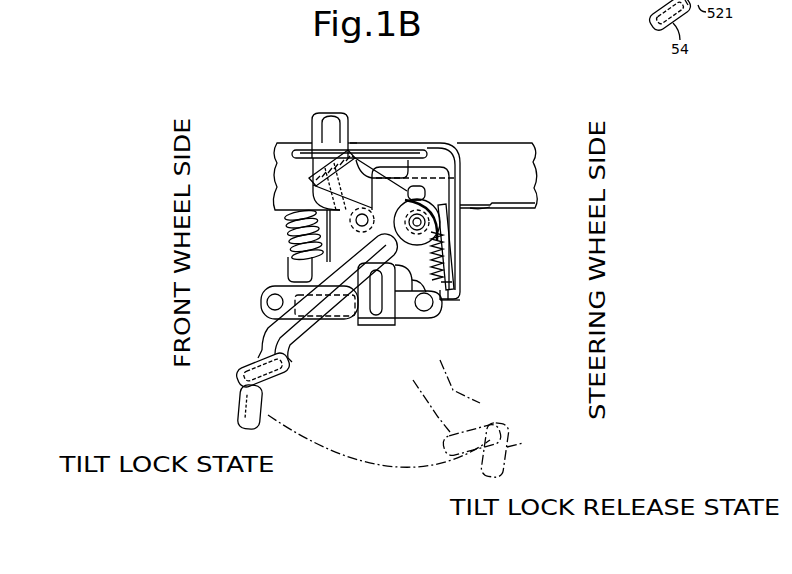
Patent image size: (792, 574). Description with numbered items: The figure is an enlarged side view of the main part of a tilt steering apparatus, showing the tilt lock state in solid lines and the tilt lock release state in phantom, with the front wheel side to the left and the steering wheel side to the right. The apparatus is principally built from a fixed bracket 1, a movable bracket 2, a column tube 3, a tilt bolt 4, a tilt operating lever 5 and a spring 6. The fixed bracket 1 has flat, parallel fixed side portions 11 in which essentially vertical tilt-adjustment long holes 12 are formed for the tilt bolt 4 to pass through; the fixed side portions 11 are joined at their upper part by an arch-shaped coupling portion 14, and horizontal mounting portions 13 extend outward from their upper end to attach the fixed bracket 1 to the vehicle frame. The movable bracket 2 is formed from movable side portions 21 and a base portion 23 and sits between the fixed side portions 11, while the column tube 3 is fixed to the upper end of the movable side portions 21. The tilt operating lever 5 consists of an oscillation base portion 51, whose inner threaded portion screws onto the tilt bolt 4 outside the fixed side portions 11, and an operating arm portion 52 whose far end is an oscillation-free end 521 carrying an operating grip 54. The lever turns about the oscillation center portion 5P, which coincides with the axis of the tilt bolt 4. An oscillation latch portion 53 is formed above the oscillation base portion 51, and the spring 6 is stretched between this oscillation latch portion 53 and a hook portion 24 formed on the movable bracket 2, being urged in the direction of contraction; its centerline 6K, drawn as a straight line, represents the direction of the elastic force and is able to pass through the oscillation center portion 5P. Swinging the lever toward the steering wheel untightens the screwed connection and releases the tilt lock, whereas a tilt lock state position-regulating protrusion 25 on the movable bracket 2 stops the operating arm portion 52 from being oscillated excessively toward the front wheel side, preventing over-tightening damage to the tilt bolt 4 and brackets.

The fixed bracket 1 is at (466, 190).
The movable bracket 2 is at (386, 330).
The column tube 3 is at (505, 143).
The tilt bolt 4 is at (441, 225).
The tilt operating lever 5 is at (301, 327).
The oscillation center portion 5P is at (421, 218).
The spring 6 is at (450, 277).
The centerline 6K is at (412, 221).
The fixed side portions 11 is at (441, 161).
The tilt-adjustment long holes 12 is at (456, 237).
The mounting portions 13 is at (400, 150).
The coupling portion 14 is at (312, 126).
The movable side portions 21 is at (405, 270).
The base portion 23 is at (375, 328).
The hook portion 24 is at (462, 292).
The tilt lock state position-regulating protrusion 25 is at (300, 262).
The oscillation base portion 51 is at (490, 205).
The operating arm portion 52 is at (330, 318).
The oscillation latch portion 53 is at (408, 193).
The oscillation-free end 521 is at (285, 372).
The operating grip 54 is at (266, 401).